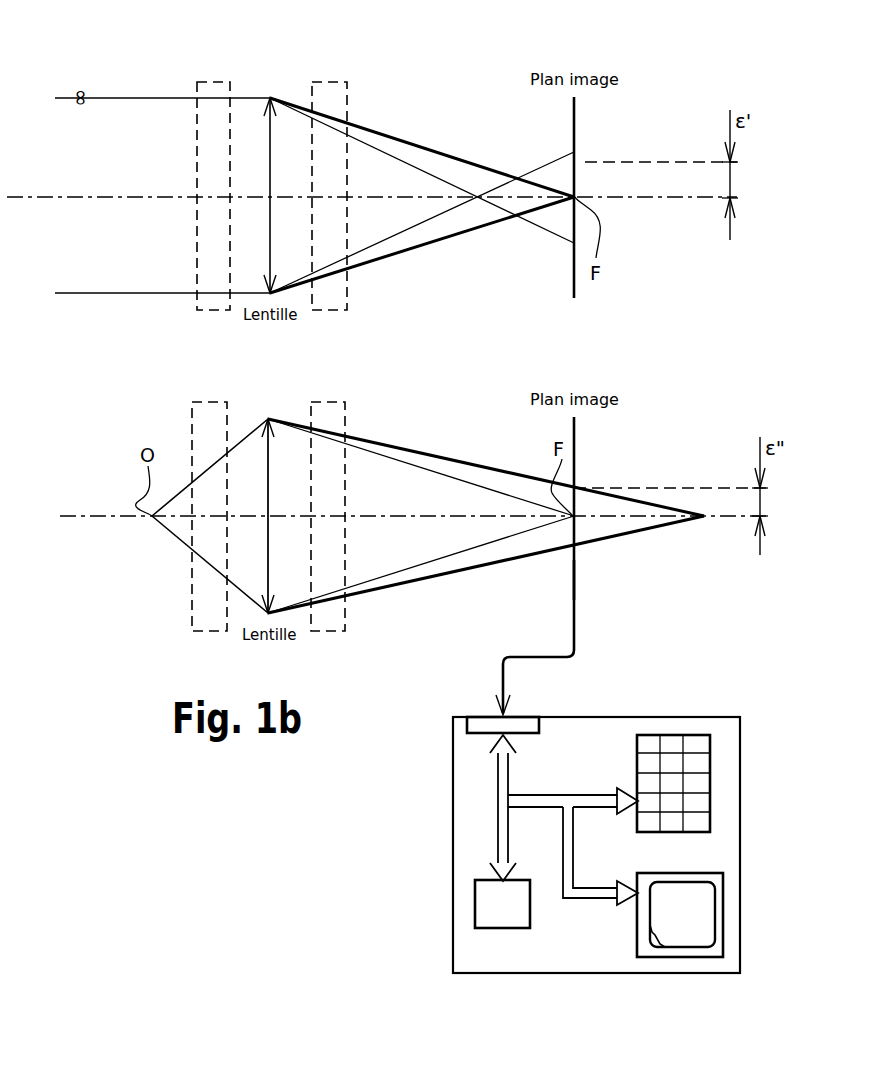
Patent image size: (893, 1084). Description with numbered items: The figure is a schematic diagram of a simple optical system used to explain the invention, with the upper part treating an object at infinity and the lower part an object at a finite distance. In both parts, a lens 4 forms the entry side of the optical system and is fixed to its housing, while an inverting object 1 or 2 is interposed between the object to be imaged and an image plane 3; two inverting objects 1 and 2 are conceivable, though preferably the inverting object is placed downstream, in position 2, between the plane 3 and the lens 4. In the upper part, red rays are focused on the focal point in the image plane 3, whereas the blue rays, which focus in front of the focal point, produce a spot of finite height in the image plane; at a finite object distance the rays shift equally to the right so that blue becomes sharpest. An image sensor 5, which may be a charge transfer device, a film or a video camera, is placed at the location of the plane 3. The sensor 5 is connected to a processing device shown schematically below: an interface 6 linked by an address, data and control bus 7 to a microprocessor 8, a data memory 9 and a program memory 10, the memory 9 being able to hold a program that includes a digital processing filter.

The inverting object 1 is at (212, 107).
The inverting object 2 is at (333, 97).
The image plane 3 is at (573, 281).
The lens 4 is at (272, 466).
The image sensor 5 is at (573, 578).
The interface 6 is at (481, 723).
The address, data and control bus 7 is at (498, 828).
The microprocessor 8 is at (477, 905).
The data memory 9 is at (718, 918).
The program memory 10 is at (705, 782).